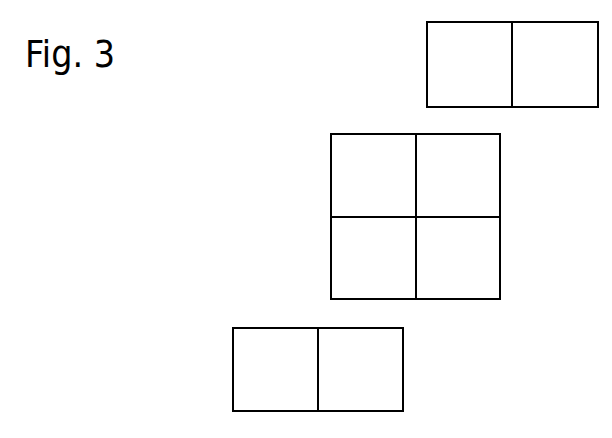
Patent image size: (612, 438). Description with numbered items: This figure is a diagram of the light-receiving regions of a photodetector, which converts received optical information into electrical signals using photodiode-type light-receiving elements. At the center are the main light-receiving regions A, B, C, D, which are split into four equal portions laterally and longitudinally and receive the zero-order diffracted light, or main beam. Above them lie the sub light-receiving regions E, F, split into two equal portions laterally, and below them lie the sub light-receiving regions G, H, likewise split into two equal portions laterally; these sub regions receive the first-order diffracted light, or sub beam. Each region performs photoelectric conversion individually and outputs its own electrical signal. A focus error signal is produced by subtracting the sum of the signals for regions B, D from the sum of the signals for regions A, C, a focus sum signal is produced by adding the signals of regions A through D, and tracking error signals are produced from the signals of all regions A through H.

The main light-receiving region A is at (373, 175).
The main light-receiving region B is at (458, 175).
The main light-receiving region C is at (458, 258).
The main light-receiving region D is at (373, 258).
The sub light-receiving region E is at (469, 64).
The sub light-receiving region F is at (555, 64).
The sub light-receiving region G is at (275, 369).
The sub light-receiving region H is at (360, 369).